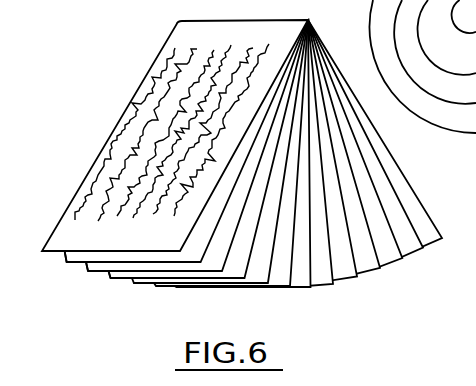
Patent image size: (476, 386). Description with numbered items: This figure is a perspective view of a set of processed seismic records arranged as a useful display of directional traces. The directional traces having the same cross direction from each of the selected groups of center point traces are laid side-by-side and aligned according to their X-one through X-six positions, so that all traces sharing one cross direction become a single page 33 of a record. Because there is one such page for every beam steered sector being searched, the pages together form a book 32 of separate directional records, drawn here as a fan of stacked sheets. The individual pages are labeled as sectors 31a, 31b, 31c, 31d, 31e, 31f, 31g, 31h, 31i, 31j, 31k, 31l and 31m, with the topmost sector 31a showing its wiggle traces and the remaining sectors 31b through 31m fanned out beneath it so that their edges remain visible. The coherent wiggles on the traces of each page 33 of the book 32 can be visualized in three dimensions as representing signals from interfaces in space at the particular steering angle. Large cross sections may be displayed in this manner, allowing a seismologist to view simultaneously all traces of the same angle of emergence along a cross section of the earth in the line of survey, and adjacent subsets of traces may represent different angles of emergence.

The sector a of seismic record 31a is at (175, 135).
The sector b 31b is at (186, 141).
The sector c 31c is at (197, 145).
The sector d 31d is at (209, 149).
The sector e 31e is at (220, 151).
The sector f 31f is at (231, 153).
The sector g 31g is at (243, 153).
The sector h 31h is at (318, 153).
The sector i 31i is at (332, 150).
The sector j 31j is at (344, 147).
The sector k 31k is at (355, 144).
The sector l 31l is at (365, 139).
The sector m 31m is at (375, 136).
The book 32 is at (147, 72).
The page 33 is at (88, 271).